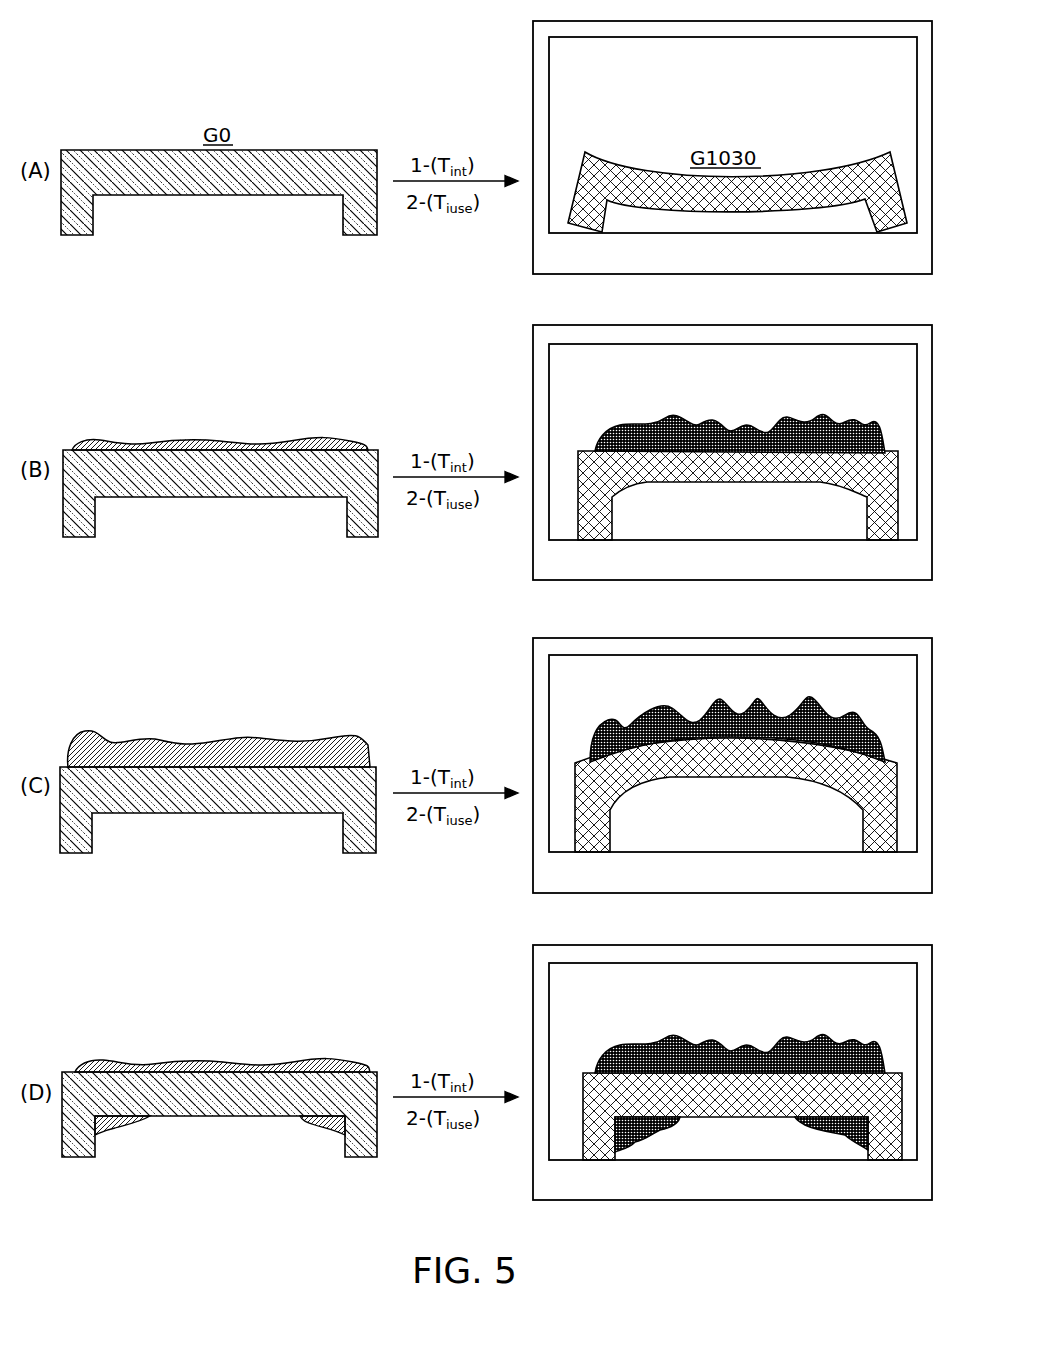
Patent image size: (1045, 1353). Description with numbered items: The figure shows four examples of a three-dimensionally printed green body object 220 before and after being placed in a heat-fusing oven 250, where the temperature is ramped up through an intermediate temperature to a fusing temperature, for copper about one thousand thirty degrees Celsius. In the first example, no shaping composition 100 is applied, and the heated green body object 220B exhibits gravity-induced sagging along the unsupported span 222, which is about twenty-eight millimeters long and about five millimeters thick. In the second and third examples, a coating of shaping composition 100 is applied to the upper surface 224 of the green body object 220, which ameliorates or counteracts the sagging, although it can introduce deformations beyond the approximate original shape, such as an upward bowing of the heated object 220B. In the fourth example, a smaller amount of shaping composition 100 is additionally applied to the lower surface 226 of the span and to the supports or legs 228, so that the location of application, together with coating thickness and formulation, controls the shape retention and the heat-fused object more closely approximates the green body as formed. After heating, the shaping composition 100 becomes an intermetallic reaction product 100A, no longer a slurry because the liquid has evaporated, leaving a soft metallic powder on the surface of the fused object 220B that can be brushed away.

The shaping composition 100 is at (219, 730).
The intermetallic reaction product 100A is at (728, 765).
The green body object 220 is at (219, 653).
The heated green body object 220B is at (737, 638).
The unsupported span 222 is at (340, 100).
The upper surface 224 is at (318, 729).
The lower surface 226 is at (282, 1130).
The supports or legs 228 is at (78, 1140).
The heat-fusing oven 250 is at (754, 1191).